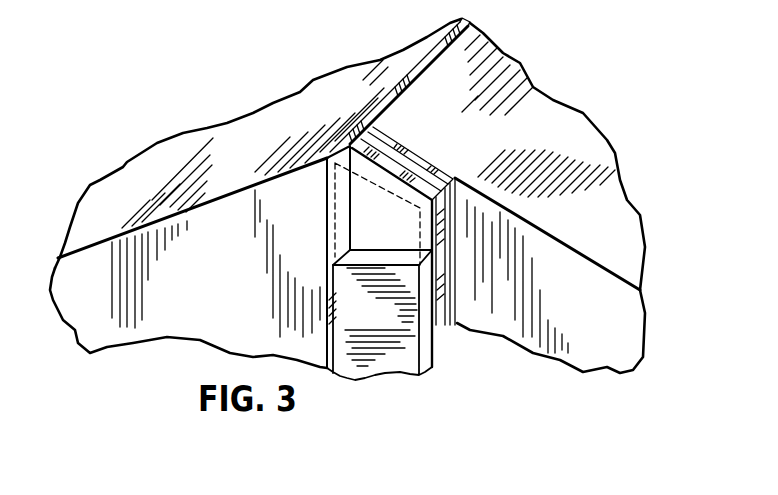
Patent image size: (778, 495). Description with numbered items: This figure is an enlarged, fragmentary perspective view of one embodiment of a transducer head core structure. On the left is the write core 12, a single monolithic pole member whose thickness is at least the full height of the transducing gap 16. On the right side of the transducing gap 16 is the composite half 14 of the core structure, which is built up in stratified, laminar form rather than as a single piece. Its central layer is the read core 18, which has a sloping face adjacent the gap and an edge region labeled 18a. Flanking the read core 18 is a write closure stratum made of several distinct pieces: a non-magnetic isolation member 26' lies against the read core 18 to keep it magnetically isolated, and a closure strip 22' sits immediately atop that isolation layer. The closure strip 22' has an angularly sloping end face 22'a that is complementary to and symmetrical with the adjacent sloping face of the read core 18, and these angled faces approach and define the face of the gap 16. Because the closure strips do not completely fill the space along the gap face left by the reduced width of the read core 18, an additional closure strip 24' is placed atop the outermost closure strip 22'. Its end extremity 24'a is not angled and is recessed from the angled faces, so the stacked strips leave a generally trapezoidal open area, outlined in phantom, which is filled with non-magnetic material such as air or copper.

The write core 12 is at (127, 158).
The composite half of the core structure 14 is at (358, 200).
The transducing gap 16 is at (434, 54).
The read core 18 is at (613, 153).
The edge portion of second panel 18a is at (530, 162).
The closure strip 22' is at (463, 251).
The angled face of closure strip 22'a is at (404, 152).
The additional closure strip 24' is at (379, 322).
The end extremity of closure strip 24'a is at (362, 254).
The non-magnetic isolation member 26' is at (423, 163).